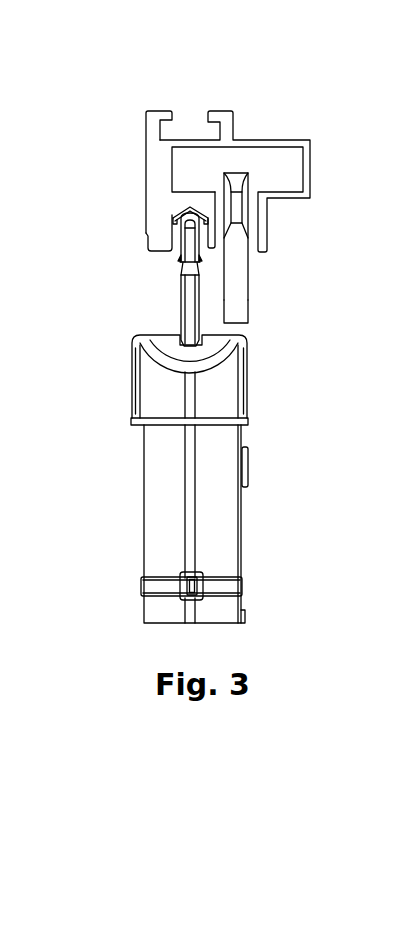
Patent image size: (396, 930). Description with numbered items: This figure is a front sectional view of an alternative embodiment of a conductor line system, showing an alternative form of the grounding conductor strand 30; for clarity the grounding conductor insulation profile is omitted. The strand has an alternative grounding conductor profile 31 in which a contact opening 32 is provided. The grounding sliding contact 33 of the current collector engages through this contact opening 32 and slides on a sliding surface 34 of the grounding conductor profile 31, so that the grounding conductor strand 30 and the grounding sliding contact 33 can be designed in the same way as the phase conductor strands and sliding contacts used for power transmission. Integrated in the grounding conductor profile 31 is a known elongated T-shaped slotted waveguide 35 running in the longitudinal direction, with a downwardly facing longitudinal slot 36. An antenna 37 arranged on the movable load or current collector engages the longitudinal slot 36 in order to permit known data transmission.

The grounding conductor strand 30 is at (251, 153).
The grounding conductor profile 31 is at (156, 108).
The contact opening 32 is at (177, 253).
The grounding sliding contact 33 is at (180, 310).
The sliding surface 34 is at (176, 205).
The T-shaped slotted waveguide 35 is at (296, 155).
The longitudinal slot 36 is at (253, 254).
The antenna 37 is at (249, 317).